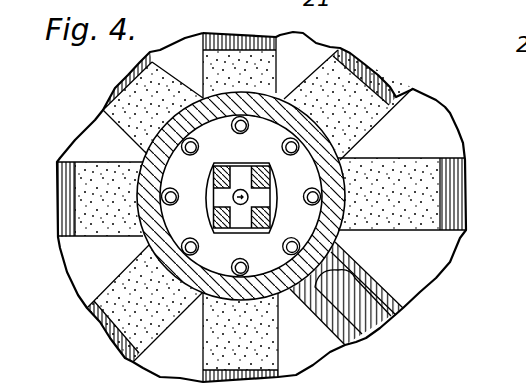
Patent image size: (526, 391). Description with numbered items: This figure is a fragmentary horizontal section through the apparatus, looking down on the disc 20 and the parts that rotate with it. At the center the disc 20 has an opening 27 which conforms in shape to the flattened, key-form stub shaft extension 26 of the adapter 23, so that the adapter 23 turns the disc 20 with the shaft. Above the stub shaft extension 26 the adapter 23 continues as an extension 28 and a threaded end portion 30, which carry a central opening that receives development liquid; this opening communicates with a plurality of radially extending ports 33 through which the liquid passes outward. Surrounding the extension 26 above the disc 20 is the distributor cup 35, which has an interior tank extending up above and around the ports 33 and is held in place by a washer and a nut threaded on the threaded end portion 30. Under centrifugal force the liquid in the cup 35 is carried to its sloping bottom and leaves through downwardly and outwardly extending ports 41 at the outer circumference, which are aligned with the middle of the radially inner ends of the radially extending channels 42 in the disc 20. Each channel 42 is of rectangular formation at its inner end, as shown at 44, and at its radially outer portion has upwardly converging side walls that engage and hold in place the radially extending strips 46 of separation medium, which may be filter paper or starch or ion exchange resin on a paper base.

The disc 20 is at (436, 120).
The adapter 23 is at (262, 168).
The stub shaft extension 26 is at (272, 218).
The opening 27 is at (214, 164).
The extension 28 is at (225, 209).
The threaded end portion 30 is at (222, 197).
The radially extending ports 33 is at (265, 197).
The distributor cup 35 is at (345, 152).
The ports 41 is at (297, 247).
The radially extending channels 42 is at (393, 97).
The rectangular formation 44 is at (421, 232).
The radially extending strips 46 is at (152, 106).